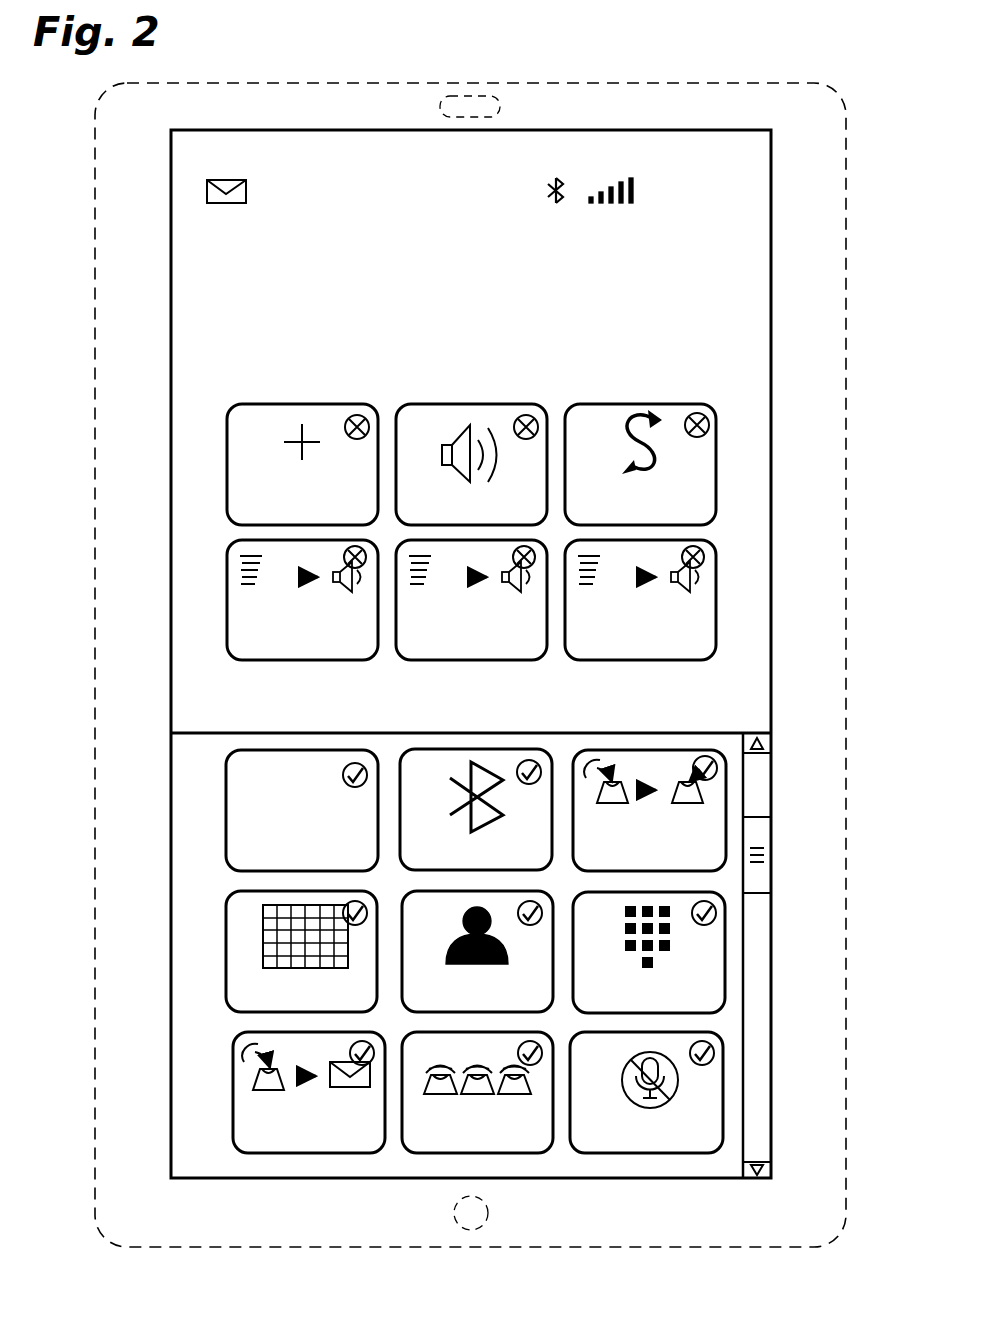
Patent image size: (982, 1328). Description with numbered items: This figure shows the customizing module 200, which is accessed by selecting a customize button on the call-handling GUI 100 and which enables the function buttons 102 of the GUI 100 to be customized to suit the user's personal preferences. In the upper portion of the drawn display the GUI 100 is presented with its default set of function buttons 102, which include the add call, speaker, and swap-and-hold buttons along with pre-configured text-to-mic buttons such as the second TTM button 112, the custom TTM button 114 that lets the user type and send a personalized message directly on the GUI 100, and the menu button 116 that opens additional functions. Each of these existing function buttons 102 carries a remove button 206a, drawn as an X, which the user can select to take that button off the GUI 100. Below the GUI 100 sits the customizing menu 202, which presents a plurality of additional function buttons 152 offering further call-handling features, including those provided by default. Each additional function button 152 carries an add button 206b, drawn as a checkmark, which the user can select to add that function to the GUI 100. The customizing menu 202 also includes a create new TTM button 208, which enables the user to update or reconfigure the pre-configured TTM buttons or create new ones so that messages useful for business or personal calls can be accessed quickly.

The GUI 100 is at (812, 590).
The function buttons 102 is at (503, 534).
The TTM 2 button 112 is at (322, 660).
The custom TTM button 114 is at (490, 660).
The menu button 116 is at (660, 660).
The additional function buttons 152 is at (479, 910).
The customizing module 200 is at (120, 282).
The customizing menu 202 is at (778, 935).
The remove button 206a is at (706, 405).
The add button 206b is at (700, 762).
The create new TTM button 208 is at (226, 768).